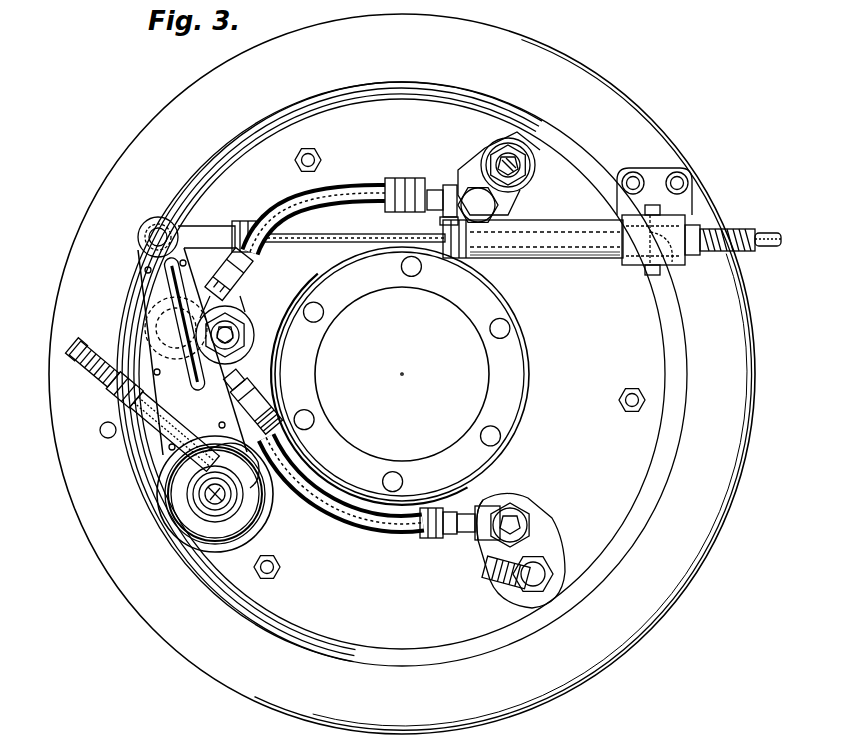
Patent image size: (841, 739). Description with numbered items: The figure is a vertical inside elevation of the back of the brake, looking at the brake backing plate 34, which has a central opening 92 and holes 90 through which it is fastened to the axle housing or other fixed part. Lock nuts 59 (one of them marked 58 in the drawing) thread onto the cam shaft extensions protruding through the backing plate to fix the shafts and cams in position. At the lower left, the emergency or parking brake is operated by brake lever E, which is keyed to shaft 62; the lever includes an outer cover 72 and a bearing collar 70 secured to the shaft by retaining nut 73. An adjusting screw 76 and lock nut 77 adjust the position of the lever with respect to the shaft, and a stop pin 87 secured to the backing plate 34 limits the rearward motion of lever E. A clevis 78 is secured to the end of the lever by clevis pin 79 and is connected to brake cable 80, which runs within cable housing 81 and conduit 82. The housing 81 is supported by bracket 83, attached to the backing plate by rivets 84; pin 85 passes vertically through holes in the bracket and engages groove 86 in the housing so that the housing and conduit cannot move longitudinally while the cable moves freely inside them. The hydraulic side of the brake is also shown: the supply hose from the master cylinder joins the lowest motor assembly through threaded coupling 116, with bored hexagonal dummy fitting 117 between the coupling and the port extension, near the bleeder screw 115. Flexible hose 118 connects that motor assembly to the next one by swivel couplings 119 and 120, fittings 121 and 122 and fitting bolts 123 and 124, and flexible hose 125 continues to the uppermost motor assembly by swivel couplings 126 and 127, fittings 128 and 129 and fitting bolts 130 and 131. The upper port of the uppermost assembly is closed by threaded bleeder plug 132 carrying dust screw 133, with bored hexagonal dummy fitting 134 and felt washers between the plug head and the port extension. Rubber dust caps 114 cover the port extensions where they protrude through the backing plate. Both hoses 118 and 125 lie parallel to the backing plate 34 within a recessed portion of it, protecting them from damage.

The brake backing plate 34 is at (590, 93).
The nut 58 is at (299, 166).
The lock nut 59 is at (316, 154).
The shaft 62 is at (216, 500).
The bearing collar 70 is at (190, 495).
The outer cover 72 is at (185, 524).
The retaining nut 73 is at (198, 508).
The adjusting screw 76 is at (72, 359).
The lock nut 77 is at (122, 390).
The clevis 78 is at (212, 233).
The clevis pin 79 is at (160, 222).
The brake cable 80 is at (318, 236).
The cable housing 81 is at (558, 231).
The conduit 82 is at (738, 230).
The bracket 83 is at (638, 248).
The rivets 84 is at (671, 177).
The pin 85 is at (662, 273).
The groove 86 is at (686, 265).
The stop pin 87 is at (108, 438).
The holes 90 is at (492, 338).
The central opening 92 is at (371, 297).
The rubber dust caps 114 is at (232, 304).
The bleeder screw 115 is at (506, 589).
The threaded coupling 116 is at (553, 556).
The bored hexagonal dummy fitting 117 is at (530, 606).
The flexible hose 118 is at (360, 531).
The swivel coupling 119 is at (434, 539).
The swivel coupling 120 is at (274, 403).
The fitting 121 is at (531, 517).
The fitting 122 is at (247, 328).
The fitting bolt 123 is at (521, 519).
The fitting bolt 124 is at (236, 342).
The flexible hose 125 is at (352, 186).
The swivel coupling 126 is at (236, 272).
The swivel coupling 127 is at (401, 186).
The fitting 128 is at (123, 333).
The fitting 129 is at (433, 186).
The fitting bolt 130 is at (126, 318).
The fitting bolt 131 is at (496, 208).
The threaded bleeder plug 132 is at (540, 178).
The dust screw 133 is at (500, 160).
The bored hexagonal dummy fitting 134 is at (530, 160).
The brake lever E is at (140, 243).